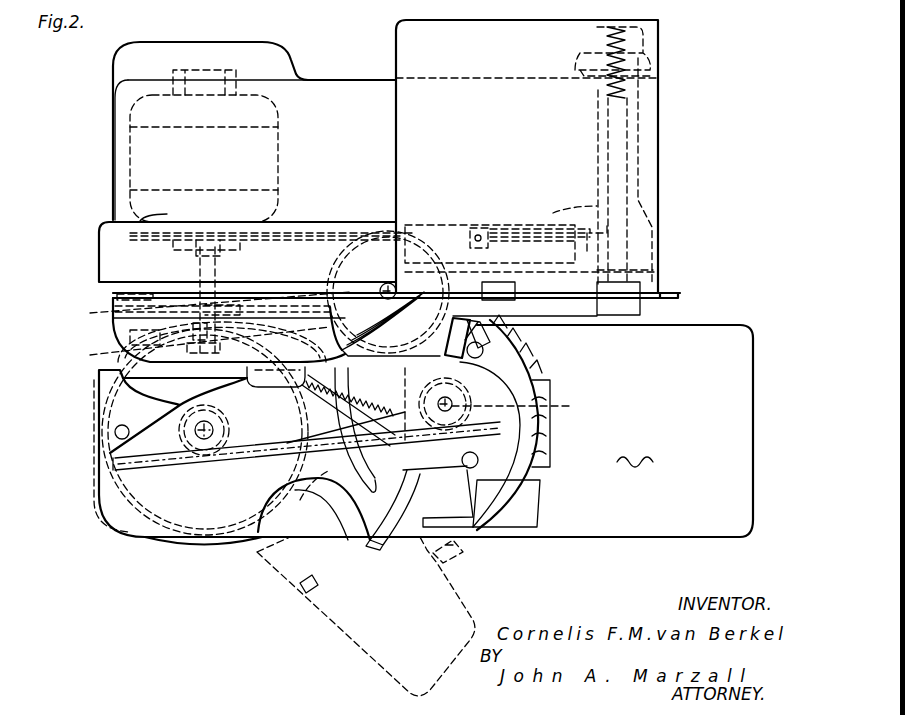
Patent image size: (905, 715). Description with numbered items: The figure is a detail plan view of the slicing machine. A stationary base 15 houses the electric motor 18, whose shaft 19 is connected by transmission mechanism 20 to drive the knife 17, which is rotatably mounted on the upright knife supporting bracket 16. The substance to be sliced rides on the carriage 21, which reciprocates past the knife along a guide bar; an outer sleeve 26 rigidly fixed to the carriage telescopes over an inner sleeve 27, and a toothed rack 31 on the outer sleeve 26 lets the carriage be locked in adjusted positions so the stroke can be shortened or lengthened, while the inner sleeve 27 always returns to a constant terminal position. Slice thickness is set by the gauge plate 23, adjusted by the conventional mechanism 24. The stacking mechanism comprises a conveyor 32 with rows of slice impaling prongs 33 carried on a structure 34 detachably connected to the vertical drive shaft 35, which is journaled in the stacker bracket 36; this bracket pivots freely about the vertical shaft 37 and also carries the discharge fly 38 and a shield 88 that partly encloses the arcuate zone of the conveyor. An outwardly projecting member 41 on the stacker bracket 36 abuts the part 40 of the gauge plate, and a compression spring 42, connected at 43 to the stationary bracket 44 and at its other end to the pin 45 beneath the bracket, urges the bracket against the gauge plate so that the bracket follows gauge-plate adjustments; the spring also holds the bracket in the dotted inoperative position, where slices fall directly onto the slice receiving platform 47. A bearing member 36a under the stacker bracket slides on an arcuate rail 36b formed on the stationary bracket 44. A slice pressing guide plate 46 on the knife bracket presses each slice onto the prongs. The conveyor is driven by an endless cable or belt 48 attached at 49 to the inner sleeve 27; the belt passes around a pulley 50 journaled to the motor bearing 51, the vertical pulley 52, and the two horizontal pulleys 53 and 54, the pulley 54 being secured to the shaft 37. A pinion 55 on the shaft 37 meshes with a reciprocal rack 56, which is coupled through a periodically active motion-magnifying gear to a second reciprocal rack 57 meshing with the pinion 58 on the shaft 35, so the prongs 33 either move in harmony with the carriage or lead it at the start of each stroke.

The stationary base 15 is at (331, 90).
The knife supporting bracket 16 is at (125, 328).
The knife 17 is at (114, 308).
The electric motor 18 is at (130, 160).
The motor shaft 19 is at (200, 266).
The transmission mechanism 20 is at (198, 346).
The carriage 21 is at (420, 131).
The gauge plate 23 is at (680, 292).
The gauge plate adjusting mechanism 24 is at (640, 45).
The outer sleeve 26 is at (472, 228).
The inner sleeve 27 is at (585, 256).
The toothed rack 31 is at (466, 467).
The conveyor 32 is at (540, 366).
The slice impaling prongs 33 is at (528, 346).
The prong supporting structure 34 is at (483, 351).
The conveyor drive shaft 35 is at (547, 405).
The stacker bracket 36 is at (548, 440).
The bearing member 36a is at (350, 380).
The arcuate rail 36b is at (398, 512).
The vertical shaft 37 is at (195, 432).
The discharge fly 38 is at (527, 462).
The gauge plate part 40 is at (640, 306).
The outwardly projecting member 41 is at (402, 321).
The compression spring 42 is at (306, 443).
The spring connection point 43 is at (348, 410).
The stationary bracket 44 is at (348, 505).
The pin 45 is at (296, 387).
The slice pressing guide plate 46 is at (405, 338).
The slice receiving platform 47 is at (733, 428).
The endless cable or belt 48 is at (282, 235).
The belt attachment point 49 is at (458, 230).
The pulley 50 is at (270, 245).
The motor bearing 51 is at (232, 247).
The vertical pulley 52 is at (600, 225).
The horizontal pulley 53 is at (356, 237).
The horizontal pulley 54 is at (137, 538).
The pinion 55 is at (172, 400).
The reciprocal rack 56 is at (100, 477).
The second reciprocal rack 57 is at (427, 457).
The pinion 58 is at (447, 390).
The shield 88 is at (330, 432).